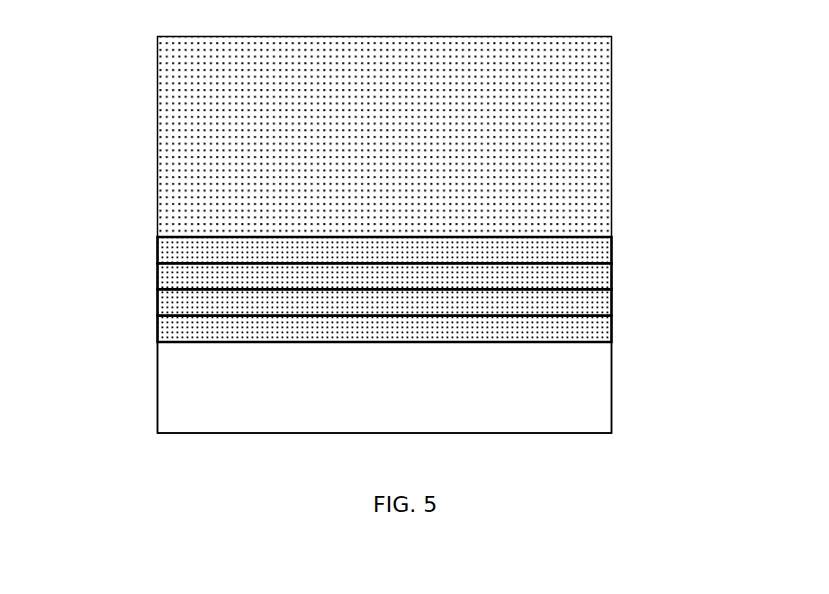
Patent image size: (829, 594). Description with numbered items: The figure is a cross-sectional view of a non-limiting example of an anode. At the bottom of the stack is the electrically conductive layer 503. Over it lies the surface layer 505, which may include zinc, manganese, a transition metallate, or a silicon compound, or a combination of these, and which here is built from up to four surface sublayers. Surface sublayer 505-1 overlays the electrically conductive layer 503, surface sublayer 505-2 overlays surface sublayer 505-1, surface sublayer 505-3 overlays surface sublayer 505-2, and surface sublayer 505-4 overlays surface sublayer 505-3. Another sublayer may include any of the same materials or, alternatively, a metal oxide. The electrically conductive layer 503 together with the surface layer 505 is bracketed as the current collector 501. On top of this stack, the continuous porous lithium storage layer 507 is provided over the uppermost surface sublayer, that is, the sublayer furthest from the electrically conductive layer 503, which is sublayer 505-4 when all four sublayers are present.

The current collector 501 is at (121, 237).
The electrically conductive layer 503 is at (582, 393).
The surface layer 505 is at (478, 283).
The surface sublayer 505-1 is at (423, 329).
The surface sublayer 505-2 is at (587, 303).
The surface sublayer 505-3 is at (587, 276).
The surface sublayer 505-4 is at (587, 248).
The continuous porous lithium storage layer 507 is at (176, 91).